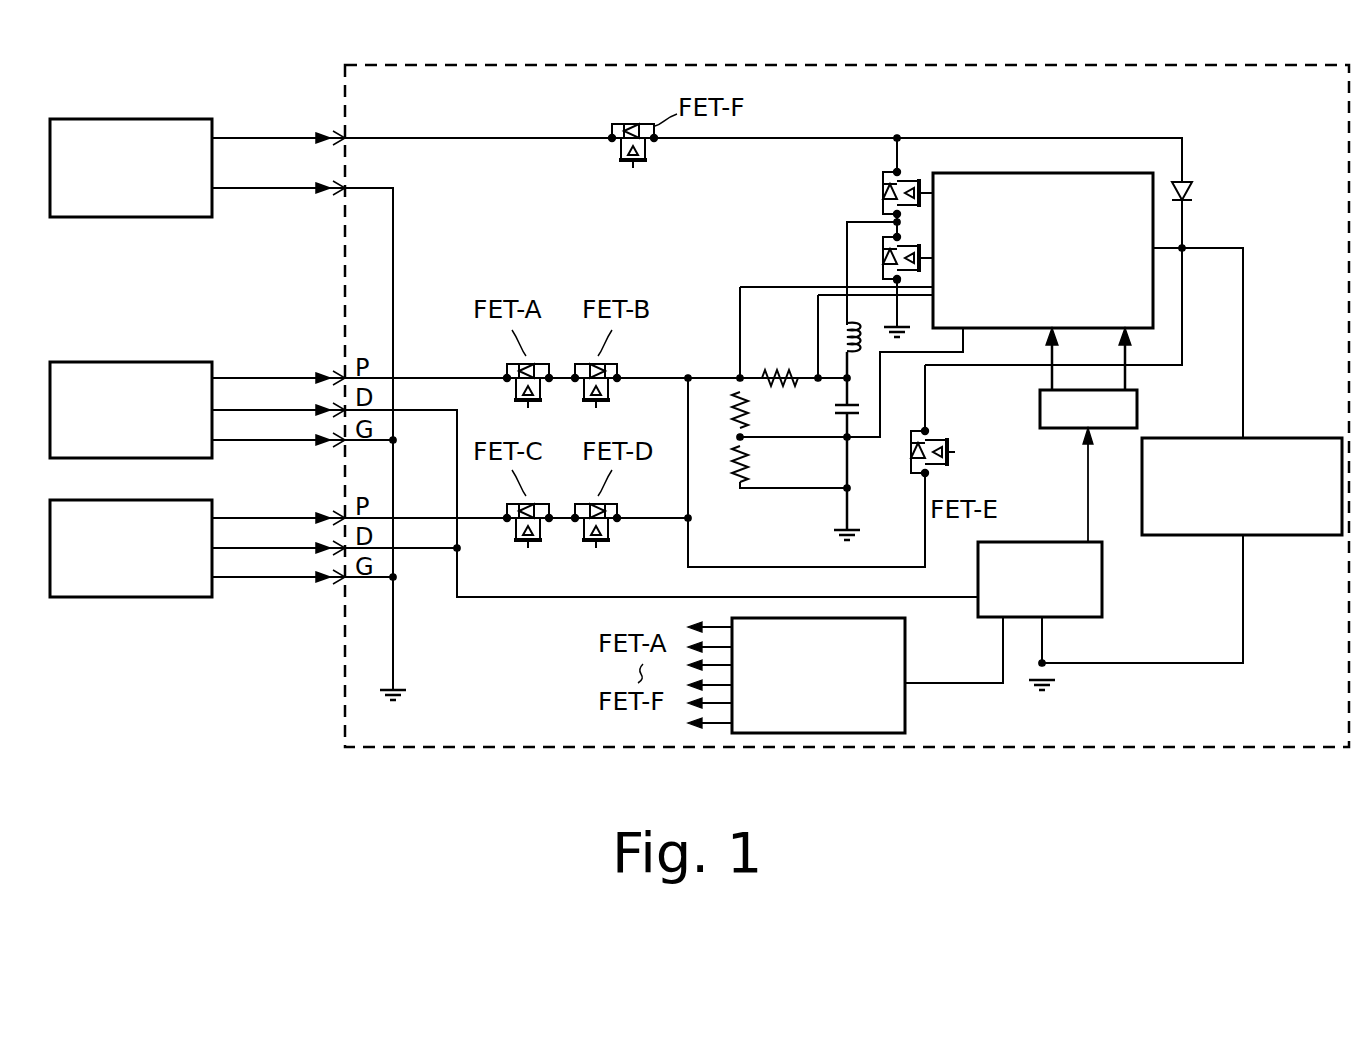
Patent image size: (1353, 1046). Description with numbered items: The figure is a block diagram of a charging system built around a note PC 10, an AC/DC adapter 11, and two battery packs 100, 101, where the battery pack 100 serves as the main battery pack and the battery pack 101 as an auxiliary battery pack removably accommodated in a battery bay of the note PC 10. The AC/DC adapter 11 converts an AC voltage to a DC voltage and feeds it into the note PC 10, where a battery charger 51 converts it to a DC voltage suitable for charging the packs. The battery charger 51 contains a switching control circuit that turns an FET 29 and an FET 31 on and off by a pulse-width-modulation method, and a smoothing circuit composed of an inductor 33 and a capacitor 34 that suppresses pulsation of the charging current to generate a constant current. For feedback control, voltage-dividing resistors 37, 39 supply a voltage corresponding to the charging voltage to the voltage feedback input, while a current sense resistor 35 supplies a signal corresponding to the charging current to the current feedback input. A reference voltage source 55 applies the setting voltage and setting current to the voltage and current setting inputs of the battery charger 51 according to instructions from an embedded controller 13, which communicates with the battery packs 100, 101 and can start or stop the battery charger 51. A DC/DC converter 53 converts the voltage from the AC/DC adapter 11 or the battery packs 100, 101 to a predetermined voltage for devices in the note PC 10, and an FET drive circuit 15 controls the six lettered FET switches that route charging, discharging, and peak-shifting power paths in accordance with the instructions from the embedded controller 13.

The note PC 10 is at (401, 110).
The AC/DC adapter 11 is at (208, 97).
The embedded controller (EC) 13 is at (1102, 578).
The FET drive circuit 15 is at (905, 634).
The FET 29 is at (872, 192).
The FET 31 is at (872, 257).
The inductor 33 is at (856, 347).
The capacitor 34 is at (855, 418).
The current sense resistor 35 is at (782, 372).
The voltage-dividing resistor 37 is at (746, 406).
The voltage-dividing resistor 39 is at (746, 462).
The battery charger 51 is at (1028, 173).
The DC/DC converter 53 is at (1262, 438).
The reference voltage source 55 is at (1137, 404).
The battery pack 100 is at (206, 340).
The battery pack 101 is at (214, 512).